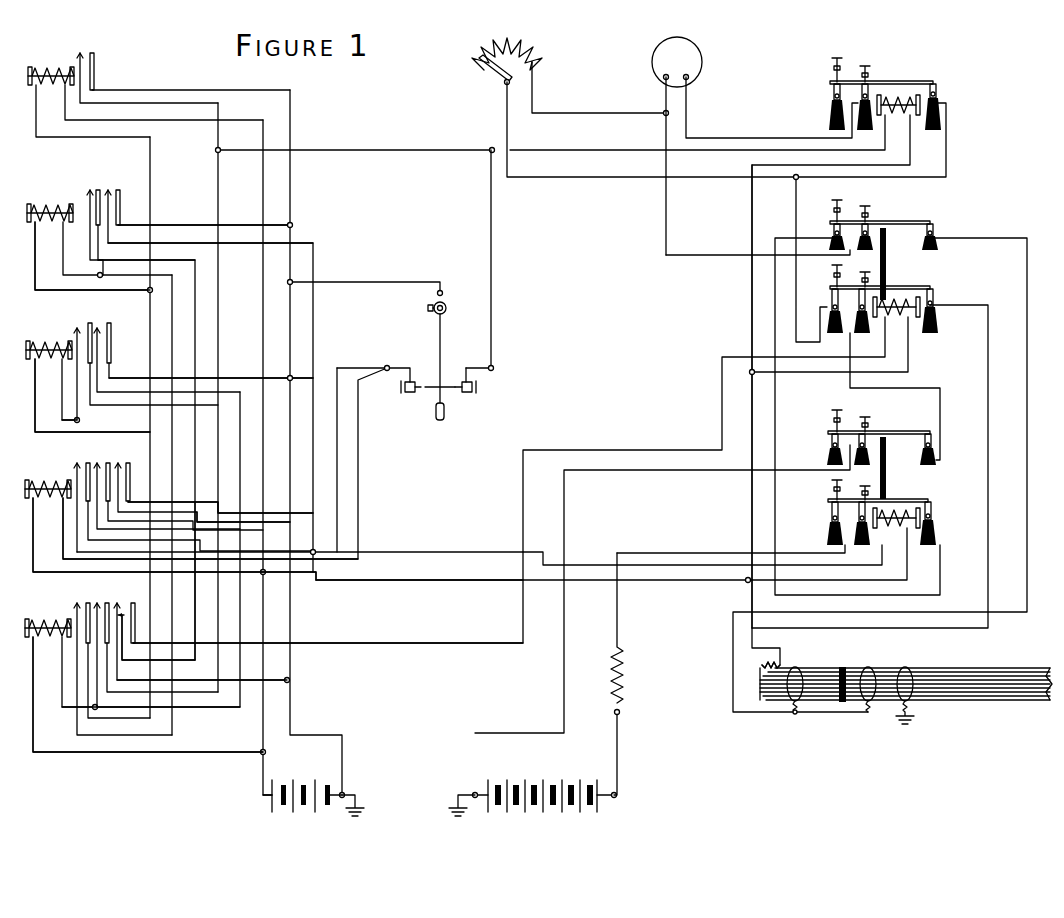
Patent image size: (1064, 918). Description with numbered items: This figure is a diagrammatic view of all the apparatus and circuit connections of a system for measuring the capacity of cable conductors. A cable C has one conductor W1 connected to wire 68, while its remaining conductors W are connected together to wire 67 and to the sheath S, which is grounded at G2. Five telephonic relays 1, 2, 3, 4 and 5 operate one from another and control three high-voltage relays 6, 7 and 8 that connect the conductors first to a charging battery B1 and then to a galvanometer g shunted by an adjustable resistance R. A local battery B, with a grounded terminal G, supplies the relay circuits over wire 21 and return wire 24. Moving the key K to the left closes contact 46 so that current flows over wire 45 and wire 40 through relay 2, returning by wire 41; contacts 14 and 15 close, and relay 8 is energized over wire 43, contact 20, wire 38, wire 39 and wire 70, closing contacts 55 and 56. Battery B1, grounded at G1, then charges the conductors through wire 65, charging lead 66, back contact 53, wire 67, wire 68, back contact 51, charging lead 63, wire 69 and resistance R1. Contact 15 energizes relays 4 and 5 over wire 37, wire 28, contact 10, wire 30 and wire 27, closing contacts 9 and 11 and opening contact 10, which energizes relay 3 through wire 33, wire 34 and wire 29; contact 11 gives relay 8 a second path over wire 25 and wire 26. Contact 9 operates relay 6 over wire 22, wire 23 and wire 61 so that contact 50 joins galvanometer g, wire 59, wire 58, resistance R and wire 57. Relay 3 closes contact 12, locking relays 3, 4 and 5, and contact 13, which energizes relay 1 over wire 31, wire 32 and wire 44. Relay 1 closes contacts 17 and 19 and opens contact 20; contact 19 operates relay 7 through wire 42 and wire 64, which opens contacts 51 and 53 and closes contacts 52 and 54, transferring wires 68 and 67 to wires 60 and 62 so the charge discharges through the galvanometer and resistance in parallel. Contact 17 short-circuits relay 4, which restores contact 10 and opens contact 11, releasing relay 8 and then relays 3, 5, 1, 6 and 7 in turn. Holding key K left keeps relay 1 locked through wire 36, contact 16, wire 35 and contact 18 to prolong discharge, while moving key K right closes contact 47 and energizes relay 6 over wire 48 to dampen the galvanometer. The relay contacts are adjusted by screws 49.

The relay 1 is at (56, 618).
The relay 2 is at (57, 479).
The relay 3 is at (58, 340).
The relay 4 is at (60, 202).
The relay 5 is at (62, 64).
The relay 6 is at (887, 113).
The relay 7 is at (887, 313).
The relay 8 is at (884, 524).
The contact 9 is at (82, 53).
The contact 10 is at (93, 188).
The contact 11 is at (114, 188).
The contact 12 is at (80, 326).
The contact 13 is at (101, 326).
The contact 14 is at (80, 461).
The contact 15 is at (100, 461).
The contact 16 is at (127, 461).
The contact 17 is at (80, 601).
The contact 18 is at (100, 601).
The contact 19 is at (126, 601).
The contact 20 is at (126, 614).
The wire 21 is at (218, 90).
The wire 22 is at (219, 105).
The wire 23 is at (330, 151).
The wire 24 is at (263, 216).
The wire 25 is at (163, 227).
The wire 26 is at (160, 246).
The wire 27 is at (151, 197).
The wire 28 is at (196, 300).
The wire 29 is at (173, 315).
The wire 30 is at (36, 276).
The wire 31 is at (255, 378).
The wire 32 is at (241, 450).
The wire 33 is at (92, 420).
The wire 34 is at (36, 424).
The wire 35 is at (216, 502).
The wire 36 is at (262, 513).
The wire 37 is at (337, 522).
The wire 38 is at (196, 612).
The wire 39 is at (203, 548).
The wire 40 is at (62, 533).
The wire 41 is at (34, 565).
The wire 42 is at (338, 644).
The wire 43 is at (193, 679).
The wire 44 is at (36, 750).
The wire 45 is at (343, 283).
The contact 46 is at (416, 395).
The contact 47 is at (467, 395).
The wire 48 is at (492, 308).
The adjusting screw 49 is at (831, 66).
The contact 50 is at (872, 74).
The back contact 51 is at (831, 206).
The contact 52 is at (870, 216).
The back contact 53 is at (831, 269).
The contact 54 is at (866, 272).
The contact 55 is at (869, 425).
The contact 56 is at (866, 490).
The wire 57 is at (553, 114).
The wire 58 is at (582, 178).
The wire 59 is at (712, 138).
The wire 60 is at (712, 256).
The wire 61 is at (751, 204).
The wire 62 is at (795, 188).
The charging lead 63 is at (775, 240).
The wire 64 is at (908, 371).
The wire 65 is at (816, 471).
The charging lead 66 is at (941, 430).
The wire 67 is at (989, 306).
The wire 68 is at (1027, 239).
The wire 69 is at (698, 553).
The wire 70 is at (424, 581).
The adjustable resistance R is at (541, 54).
The galvanometer g is at (703, 53).
The key K is at (445, 340).
The battery B is at (285, 784).
The ground G is at (359, 806).
The charging battery B1 is at (520, 786).
The ground G1 is at (455, 806).
The resistance R1 is at (626, 675).
The cable C is at (989, 664).
The conductors W is at (762, 685).
The conductor W1 is at (785, 665).
The sheath S is at (883, 662).
The ground G2 is at (903, 718).